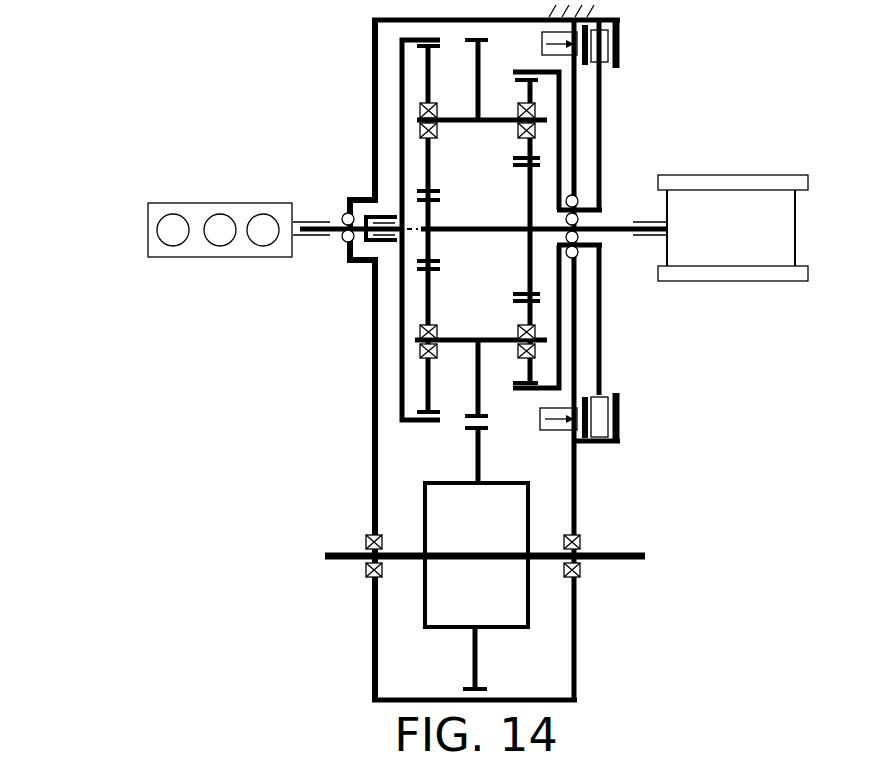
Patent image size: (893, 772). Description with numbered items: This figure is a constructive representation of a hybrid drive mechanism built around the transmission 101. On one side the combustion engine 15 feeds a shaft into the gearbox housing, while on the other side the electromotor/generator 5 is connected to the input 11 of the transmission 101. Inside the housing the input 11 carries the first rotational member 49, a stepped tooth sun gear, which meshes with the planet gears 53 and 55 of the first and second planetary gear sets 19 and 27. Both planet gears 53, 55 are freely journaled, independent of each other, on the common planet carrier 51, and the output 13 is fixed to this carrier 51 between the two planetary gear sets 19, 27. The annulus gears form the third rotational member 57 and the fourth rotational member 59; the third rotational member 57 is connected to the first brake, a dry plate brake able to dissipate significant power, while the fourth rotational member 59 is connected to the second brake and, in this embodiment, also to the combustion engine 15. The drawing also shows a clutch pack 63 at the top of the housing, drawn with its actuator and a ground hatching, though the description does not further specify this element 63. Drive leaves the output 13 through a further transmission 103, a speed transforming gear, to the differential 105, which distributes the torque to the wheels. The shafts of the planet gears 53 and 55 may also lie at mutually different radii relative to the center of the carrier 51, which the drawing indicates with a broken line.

The electromotor/generator 5 is at (728, 182).
The input 11 is at (620, 232).
The output 13 is at (474, 369).
The combustion engine 15 is at (205, 202).
The first planetary gear set 19 is at (425, 436).
The second planetary gear set 27 is at (522, 403).
The first rotational member 49 is at (428, 238).
The planet carrier 51 is at (448, 338).
The planet gear 53 is at (513, 147).
The planet gear 55 is at (430, 163).
The third rotational member 57 is at (561, 107).
The fourth rotational member 59 is at (400, 83).
The clutch 63 is at (607, 48).
The transmission 101 is at (657, 492).
The further transmission 103 is at (485, 447).
The differential 105 is at (423, 598).